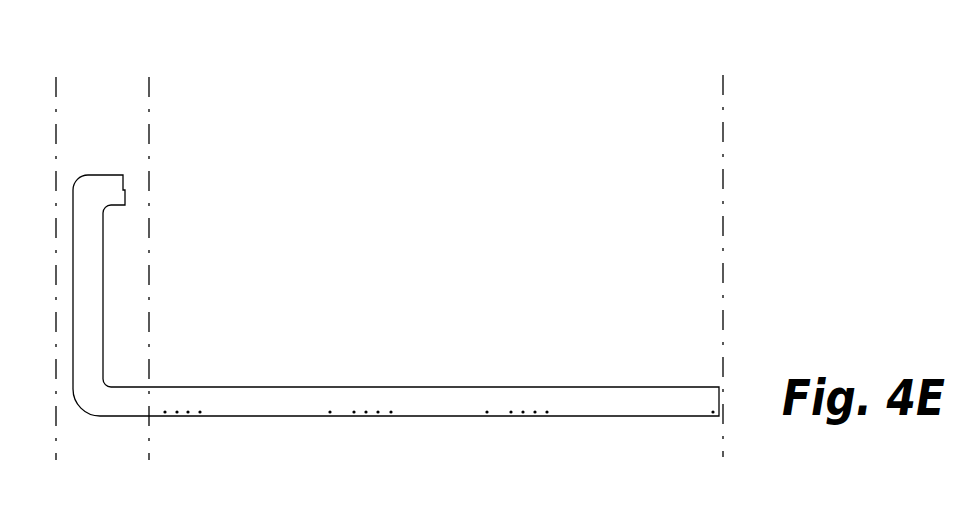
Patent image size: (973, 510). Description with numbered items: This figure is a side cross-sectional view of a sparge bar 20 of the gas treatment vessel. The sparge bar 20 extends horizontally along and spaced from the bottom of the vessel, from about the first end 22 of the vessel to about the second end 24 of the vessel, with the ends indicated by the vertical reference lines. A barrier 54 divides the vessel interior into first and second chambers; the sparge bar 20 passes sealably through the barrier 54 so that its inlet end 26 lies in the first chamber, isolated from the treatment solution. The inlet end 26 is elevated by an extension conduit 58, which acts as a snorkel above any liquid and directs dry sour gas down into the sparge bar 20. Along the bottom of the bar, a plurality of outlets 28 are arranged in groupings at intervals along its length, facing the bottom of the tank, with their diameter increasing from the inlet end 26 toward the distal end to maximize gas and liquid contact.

The sparge bar 20 is at (396, 331).
The first end 22 is at (56, 152).
The second end 24 is at (723, 150).
The barrier 54 is at (149, 150).
The inlet end 26 is at (124, 190).
The extension conduit 58 is at (92, 257).
The outlets 28 is at (205, 411).